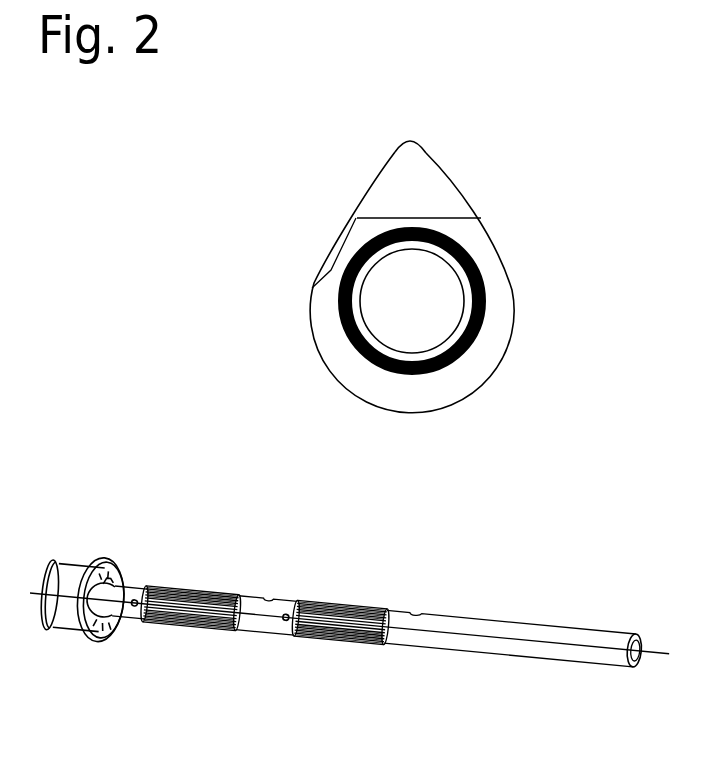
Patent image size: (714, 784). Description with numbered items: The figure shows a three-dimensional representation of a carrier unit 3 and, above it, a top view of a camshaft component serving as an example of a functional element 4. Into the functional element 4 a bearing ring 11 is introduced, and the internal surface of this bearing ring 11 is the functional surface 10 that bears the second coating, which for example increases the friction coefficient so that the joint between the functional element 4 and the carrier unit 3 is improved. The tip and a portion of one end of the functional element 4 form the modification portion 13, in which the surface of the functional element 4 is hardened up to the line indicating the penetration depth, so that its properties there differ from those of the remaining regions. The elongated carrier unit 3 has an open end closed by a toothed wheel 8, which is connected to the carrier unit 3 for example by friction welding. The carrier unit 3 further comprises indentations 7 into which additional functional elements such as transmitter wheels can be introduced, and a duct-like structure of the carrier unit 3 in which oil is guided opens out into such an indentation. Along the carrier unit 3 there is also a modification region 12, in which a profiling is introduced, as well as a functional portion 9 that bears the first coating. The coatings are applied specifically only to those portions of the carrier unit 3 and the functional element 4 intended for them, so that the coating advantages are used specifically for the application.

The carrier unit 3 is at (138, 596).
The functional element 4 is at (460, 186).
The indentations 7 is at (268, 594).
The toothed wheel 8 is at (77, 566).
The functional portion 9 is at (412, 616).
The functional surface 10 is at (467, 305).
The bearing ring 11 is at (462, 357).
The modification region 12 is at (360, 605).
The modification portion 13 is at (412, 155).